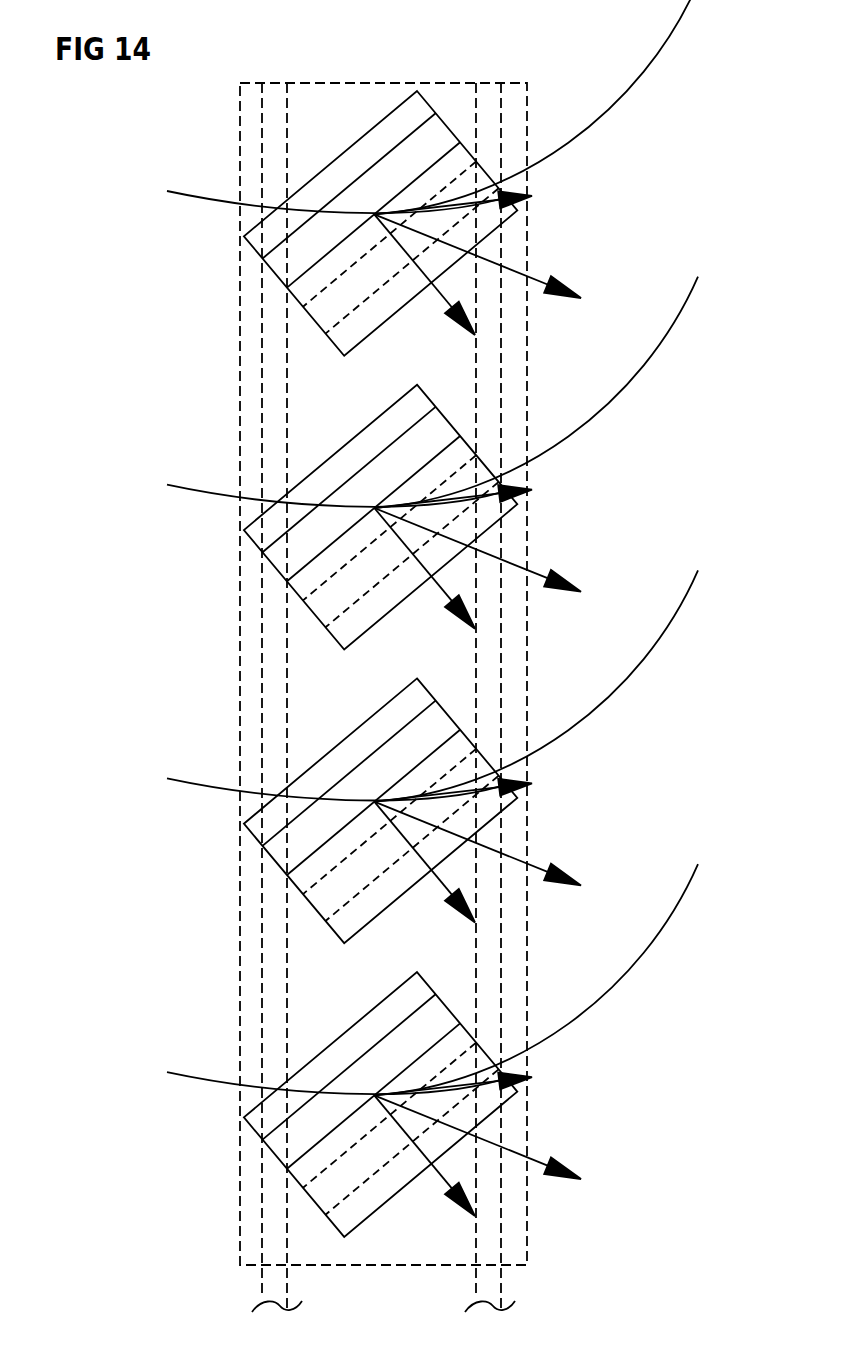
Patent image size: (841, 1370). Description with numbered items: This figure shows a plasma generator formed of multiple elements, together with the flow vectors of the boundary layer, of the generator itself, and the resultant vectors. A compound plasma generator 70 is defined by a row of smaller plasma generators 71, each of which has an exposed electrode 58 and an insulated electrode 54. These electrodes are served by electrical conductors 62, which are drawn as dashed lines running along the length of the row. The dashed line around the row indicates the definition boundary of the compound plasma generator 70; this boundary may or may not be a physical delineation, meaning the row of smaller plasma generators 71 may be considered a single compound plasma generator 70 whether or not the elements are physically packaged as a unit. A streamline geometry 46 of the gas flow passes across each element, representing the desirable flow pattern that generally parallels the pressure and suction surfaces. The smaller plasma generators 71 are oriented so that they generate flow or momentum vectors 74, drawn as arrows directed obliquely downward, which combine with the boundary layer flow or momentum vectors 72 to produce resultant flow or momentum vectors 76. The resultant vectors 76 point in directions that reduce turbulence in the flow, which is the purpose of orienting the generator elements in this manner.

The compound plasma generator 70 is at (240, 121).
The smaller plasma generator 71 is at (350, 142).
The exposed electrode 58 is at (437, 135).
The insulated electrode 54 is at (356, 310).
The streamline geometry 46 is at (167, 191).
The boundary layer flow or momentum vectors 72 is at (536, 192).
The generator flow or momentum vectors 74 is at (460, 318).
The resultant flow or momentum vectors 76 is at (580, 296).
The electrical conductors 62 is at (262, 350).